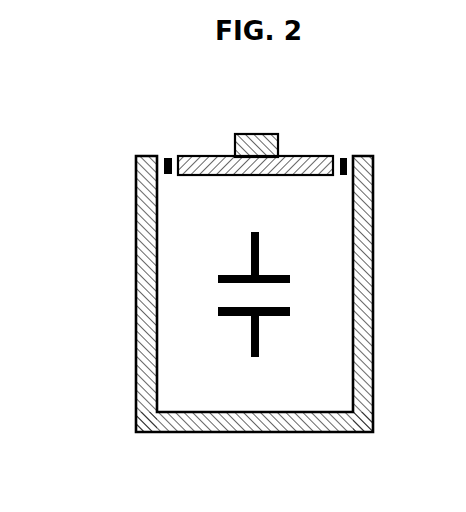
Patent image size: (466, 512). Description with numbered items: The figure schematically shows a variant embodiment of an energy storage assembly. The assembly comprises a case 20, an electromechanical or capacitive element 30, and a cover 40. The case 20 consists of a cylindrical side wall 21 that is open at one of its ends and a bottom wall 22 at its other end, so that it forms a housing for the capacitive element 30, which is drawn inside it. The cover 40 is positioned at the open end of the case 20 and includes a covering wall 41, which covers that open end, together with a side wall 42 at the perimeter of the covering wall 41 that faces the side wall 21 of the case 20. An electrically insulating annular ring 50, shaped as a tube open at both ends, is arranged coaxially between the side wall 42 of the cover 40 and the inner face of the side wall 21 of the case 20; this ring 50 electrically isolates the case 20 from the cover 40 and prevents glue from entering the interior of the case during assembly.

The case 20 is at (211, 322).
The side wall 21 is at (147, 340).
The bottom wall 22 is at (290, 422).
The capacitive element 30 is at (259, 252).
The cover 40 is at (233, 121).
The covering wall 41 is at (307, 163).
The side wall 42 is at (176, 157).
The electrically insulating annular ring 50 is at (345, 158).